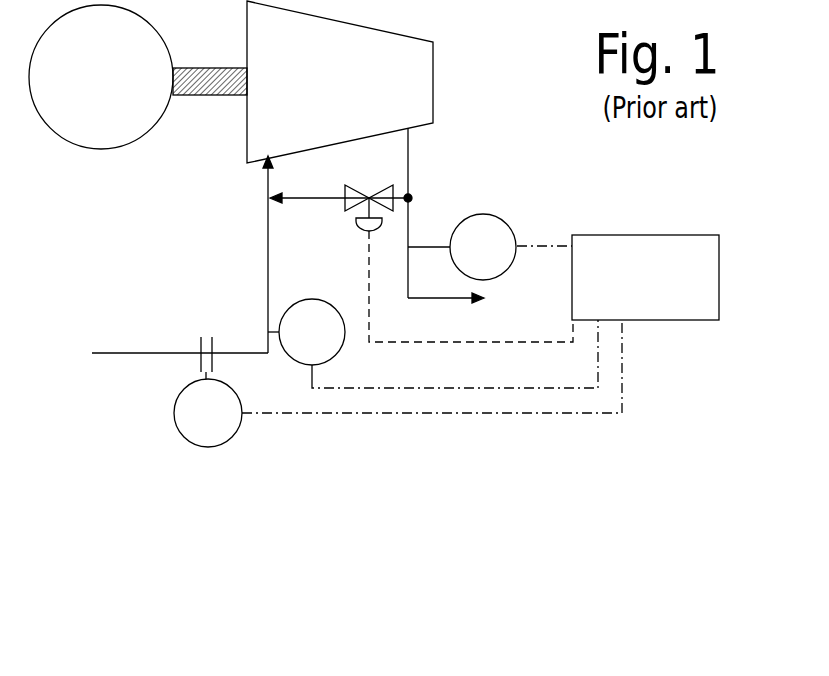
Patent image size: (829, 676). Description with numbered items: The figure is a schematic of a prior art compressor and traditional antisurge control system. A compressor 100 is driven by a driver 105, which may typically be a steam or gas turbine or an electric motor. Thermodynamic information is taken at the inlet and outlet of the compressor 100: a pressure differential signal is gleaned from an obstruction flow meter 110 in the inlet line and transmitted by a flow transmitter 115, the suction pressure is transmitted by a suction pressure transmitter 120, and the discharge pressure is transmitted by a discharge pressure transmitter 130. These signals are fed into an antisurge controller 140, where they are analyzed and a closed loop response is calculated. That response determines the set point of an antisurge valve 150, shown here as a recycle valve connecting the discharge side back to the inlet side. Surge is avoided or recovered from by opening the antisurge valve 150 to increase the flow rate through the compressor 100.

The compressor 100 is at (373, 88).
The driver 105 is at (68, 107).
The obstruction flow meter 110 is at (204, 337).
The flow transmitter 115 is at (202, 435).
The suction pressure transmitter 120 is at (299, 302).
The discharge pressure transmitter 130 is at (472, 217).
The antisurge controller 140 is at (592, 243).
The antisurge valve 150 is at (374, 193).